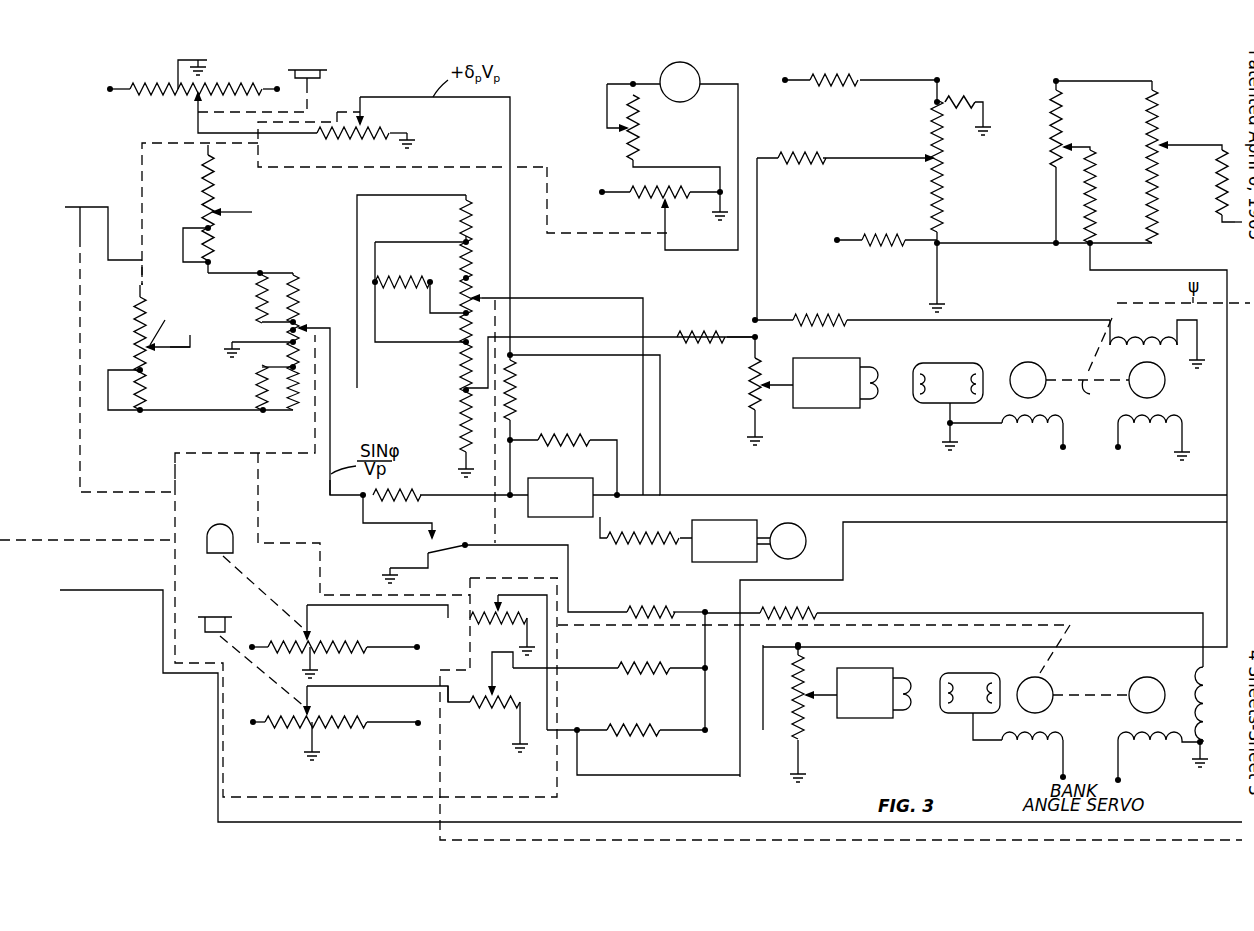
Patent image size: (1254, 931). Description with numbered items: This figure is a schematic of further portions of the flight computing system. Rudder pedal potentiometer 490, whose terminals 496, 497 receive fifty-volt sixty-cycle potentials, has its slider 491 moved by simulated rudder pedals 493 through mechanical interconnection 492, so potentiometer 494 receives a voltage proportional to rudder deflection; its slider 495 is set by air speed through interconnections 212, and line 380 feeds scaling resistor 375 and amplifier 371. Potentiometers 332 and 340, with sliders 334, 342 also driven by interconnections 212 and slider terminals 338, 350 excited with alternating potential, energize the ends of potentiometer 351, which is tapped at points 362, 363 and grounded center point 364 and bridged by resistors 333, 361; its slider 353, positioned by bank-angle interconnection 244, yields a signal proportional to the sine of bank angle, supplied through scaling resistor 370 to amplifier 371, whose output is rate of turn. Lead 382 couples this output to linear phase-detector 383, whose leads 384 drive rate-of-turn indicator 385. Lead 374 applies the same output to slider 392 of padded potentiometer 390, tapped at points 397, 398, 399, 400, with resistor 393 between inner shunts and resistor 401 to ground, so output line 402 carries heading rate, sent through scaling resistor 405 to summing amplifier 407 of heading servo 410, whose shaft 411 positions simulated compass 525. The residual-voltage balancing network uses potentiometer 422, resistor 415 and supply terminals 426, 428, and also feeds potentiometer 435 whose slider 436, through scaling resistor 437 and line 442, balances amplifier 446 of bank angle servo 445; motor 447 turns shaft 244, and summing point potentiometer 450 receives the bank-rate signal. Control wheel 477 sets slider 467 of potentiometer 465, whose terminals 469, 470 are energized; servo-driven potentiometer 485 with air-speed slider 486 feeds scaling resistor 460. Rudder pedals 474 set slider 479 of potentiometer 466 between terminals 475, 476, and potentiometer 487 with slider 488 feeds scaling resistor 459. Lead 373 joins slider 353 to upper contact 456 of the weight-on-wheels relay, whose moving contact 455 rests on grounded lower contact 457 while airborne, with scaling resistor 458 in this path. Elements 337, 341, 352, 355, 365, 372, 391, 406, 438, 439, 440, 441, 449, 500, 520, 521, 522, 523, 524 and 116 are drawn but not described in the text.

The potentiometer 490 is at (163, 84).
The terminal 497 is at (276, 87).
The terminal 496 is at (108, 92).
The slider 491 is at (196, 97).
The simulated rudder pedals 493 is at (328, 72).
The mechanical interconnection means 492 is at (305, 113).
The slider 495 is at (363, 122).
The potentiometer 494 is at (340, 143).
The mechanical interconnections 212 is at (708, 838).
The mechanical interconnection 244 is at (142, 540).
The potentiometer 332 is at (196, 210).
The slider 334 is at (220, 210).
The slider terminal 338 is at (253, 212).
The shorting loop 337 is at (183, 230).
The tapping point 362 is at (292, 274).
The slider 342 is at (148, 272).
The potentiometer 340 is at (130, 352).
The wiper arm 341 is at (150, 357).
The slider terminal 350 is at (188, 342).
The resistor 333 is at (258, 308).
The potentiometer 351 is at (310, 303).
The slider 353 is at (307, 325).
The center tapping point 364 is at (291, 338).
The resistor 361 is at (257, 385).
The junction lead 355 is at (268, 412).
The potentiometer section 352 is at (300, 350).
The tapping point 363 is at (300, 365).
The output lead 365 is at (328, 483).
The scaling resistor 370 is at (420, 494).
The lead 373 is at (362, 515).
The upper terminal 456 is at (433, 533).
The moving contact 455 is at (465, 550).
The lower contact 457 is at (432, 567).
The simulated aircraft control wheel 477 is at (222, 543).
The simulated rudder pedals 474 is at (212, 617).
The terminal 469 is at (267, 632).
The slider 467 is at (312, 634).
The potentiometer 465 is at (316, 663).
The terminal 470 is at (417, 650).
The slider 479 is at (300, 710).
The terminal 475 is at (253, 727).
The potentiometer 466 is at (315, 735).
The terminal 476 is at (417, 727).
The servo-driven potentiometer 485 is at (503, 611).
The slider 486 is at (475, 600).
The slider 488 is at (497, 690).
The servo-driven potentiometer 487 is at (503, 713).
The scaling resistor 458 is at (670, 607).
The scaling resistor 459 is at (667, 660).
The scaling resistor 460 is at (655, 727).
The lead 449 is at (973, 613).
The summing point potentiometer 450 is at (808, 713).
The amplifier 446 is at (875, 710).
The motor 447 is at (1037, 713).
The bank angle servo 445 is at (1092, 690).
The line 442 is at (1128, 250).
The lead 382 is at (605, 542).
The linear phase-detector 383 is at (737, 562).
The leads 384 is at (765, 535).
The simulated rate of turn indicator 385 is at (808, 540).
The amplifier 371 is at (582, 470).
The feedback resistor 372 is at (583, 420).
The scaling resistor 375 is at (527, 390).
The lead 374 is at (643, 398).
The slider 392 is at (500, 290).
The output line 402 is at (610, 337).
The line 380 is at (512, 257).
The potentiometer section 391 is at (460, 203).
The tap point 397 is at (462, 240).
The padded potentiometer 390 is at (493, 250).
The tap point 398 is at (460, 277).
The resistor 393 is at (402, 279).
The tap point 399 is at (460, 317).
The tap point 400 is at (460, 348).
The resistor 401 is at (463, 425).
The lead 500 is at (660, 437).
The meter 520 is at (690, 103).
The potentiometer 523 is at (601, 121).
The potentiometer 521 is at (633, 183).
The simulated compass 525 is at (601, 195).
The wiper arm 522 is at (662, 205).
The shaft 524 is at (593, 237).
The supply terminal 426 is at (785, 83).
The potentiometer 422 is at (937, 192).
The resistor 415 is at (822, 152).
The supply terminal 428 is at (837, 247).
The scaling resistor 405 is at (715, 317).
The potentiometer 406 is at (743, 393).
The summing amplifier 407 is at (832, 405).
The heading servo 410 is at (1100, 440).
The mechanical interconnecting means 411 is at (1115, 318).
The potentiometer 435 is at (1101, 162).
The slider 436 is at (1084, 133).
The scaling resistor 437 is at (1108, 198).
The potentiometer 438 is at (1170, 162).
The wiper arm 439 is at (1190, 134).
The resistor 440 is at (1206, 186).
The terminal 441 is at (1218, 235).
The lead 116 is at (143, 590).